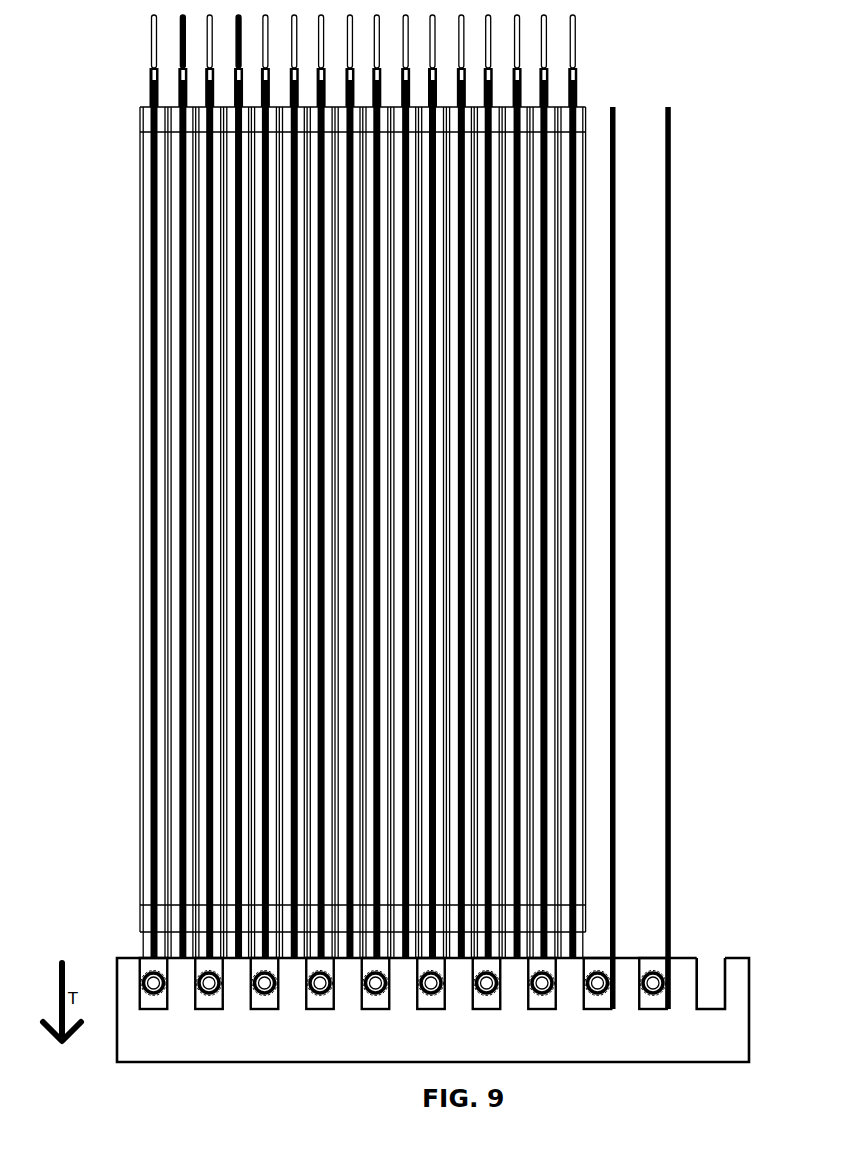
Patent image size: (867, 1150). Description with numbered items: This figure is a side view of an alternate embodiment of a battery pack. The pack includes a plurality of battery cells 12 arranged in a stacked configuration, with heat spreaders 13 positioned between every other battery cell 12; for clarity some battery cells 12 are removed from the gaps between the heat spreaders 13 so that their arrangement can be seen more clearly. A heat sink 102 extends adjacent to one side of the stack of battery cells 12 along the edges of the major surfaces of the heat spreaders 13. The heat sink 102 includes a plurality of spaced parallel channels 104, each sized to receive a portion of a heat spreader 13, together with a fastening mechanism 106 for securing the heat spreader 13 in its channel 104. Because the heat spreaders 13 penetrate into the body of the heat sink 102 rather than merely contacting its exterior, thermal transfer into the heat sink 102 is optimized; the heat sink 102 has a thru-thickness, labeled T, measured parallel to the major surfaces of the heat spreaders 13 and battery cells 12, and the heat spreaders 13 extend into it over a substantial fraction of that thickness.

The battery cell 12 is at (153, 686).
The heat spreader 13 is at (166, 652).
The heat sink 102 is at (732, 1027).
The channel 104 is at (696, 978).
The fastening mechanism 106 is at (377, 996).